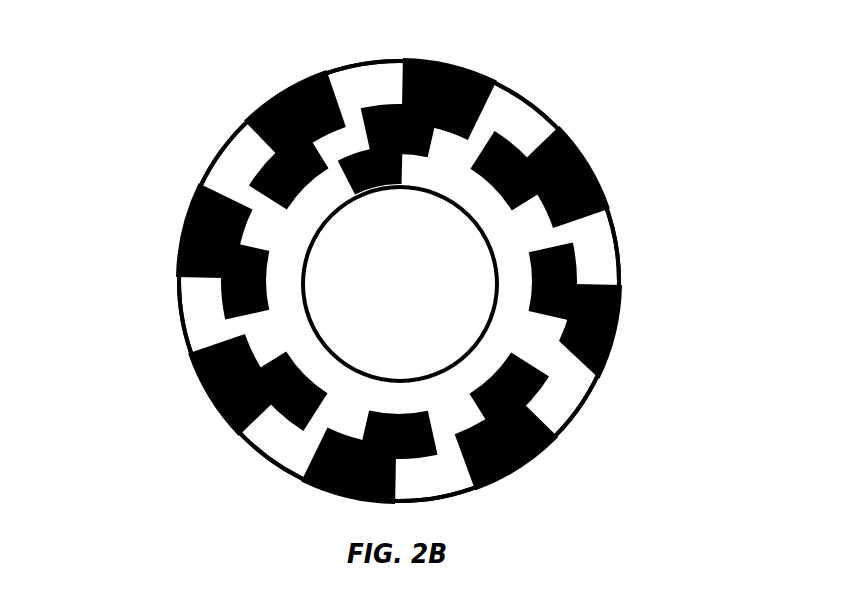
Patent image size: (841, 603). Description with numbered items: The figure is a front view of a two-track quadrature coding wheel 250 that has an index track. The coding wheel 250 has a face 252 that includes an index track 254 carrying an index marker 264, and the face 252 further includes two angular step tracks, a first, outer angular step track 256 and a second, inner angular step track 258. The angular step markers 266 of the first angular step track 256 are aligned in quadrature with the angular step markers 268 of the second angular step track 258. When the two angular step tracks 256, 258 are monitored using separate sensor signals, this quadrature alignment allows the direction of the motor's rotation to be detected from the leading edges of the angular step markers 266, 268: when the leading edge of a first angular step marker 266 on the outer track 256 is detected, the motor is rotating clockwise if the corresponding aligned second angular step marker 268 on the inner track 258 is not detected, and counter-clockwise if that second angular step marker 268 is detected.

The coding wheel 250 is at (395, 298).
The face 252 is at (575, 404).
The index track 254 is at (484, 322).
The first angular step track 256 is at (220, 166).
The second angular step track 258 is at (560, 230).
The index marker 264 is at (382, 193).
The angular step markers 266 is at (182, 243).
The angular step markers 268 is at (490, 143).